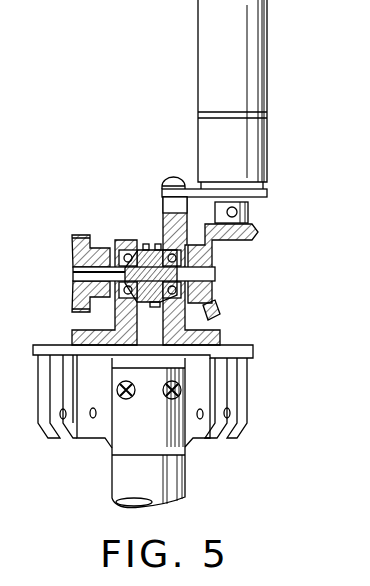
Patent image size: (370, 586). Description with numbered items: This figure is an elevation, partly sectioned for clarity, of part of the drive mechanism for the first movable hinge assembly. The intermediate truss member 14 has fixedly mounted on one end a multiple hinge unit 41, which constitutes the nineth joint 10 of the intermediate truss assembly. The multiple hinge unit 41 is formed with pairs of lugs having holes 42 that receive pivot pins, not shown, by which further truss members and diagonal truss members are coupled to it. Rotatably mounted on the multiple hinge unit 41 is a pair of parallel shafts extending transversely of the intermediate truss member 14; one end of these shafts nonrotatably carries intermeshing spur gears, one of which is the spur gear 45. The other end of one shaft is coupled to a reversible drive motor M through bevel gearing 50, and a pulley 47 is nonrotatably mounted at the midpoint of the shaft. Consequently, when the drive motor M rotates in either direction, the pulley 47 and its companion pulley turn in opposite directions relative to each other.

The reversible drive motor M is at (198, 57).
The nineth joint 10 is at (240, 344).
The intermediate truss member 14 is at (185, 498).
The multiple hinge unit 41 is at (40, 345).
The holes 42 is at (93, 418).
The spur gear 45 is at (82, 235).
The pulley 47 is at (150, 244).
The bevel gearing 50 is at (217, 256).